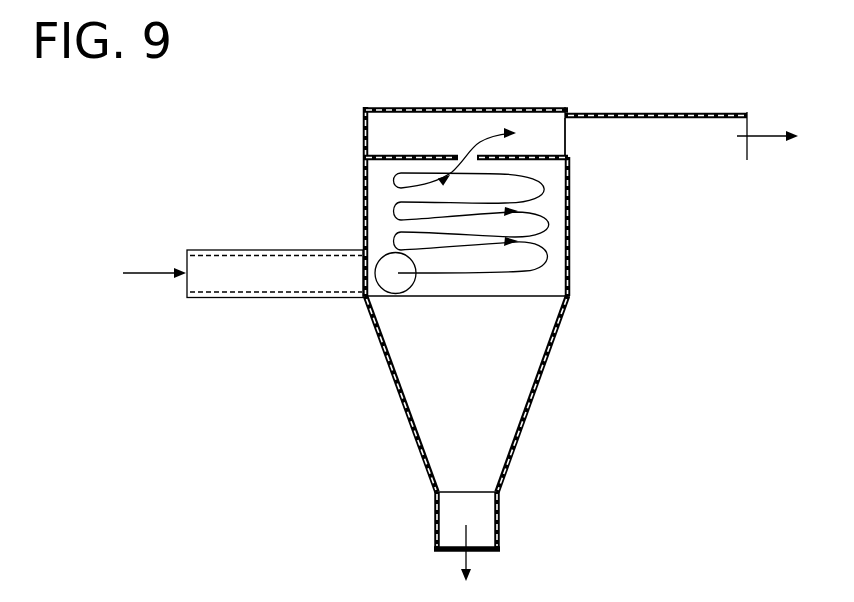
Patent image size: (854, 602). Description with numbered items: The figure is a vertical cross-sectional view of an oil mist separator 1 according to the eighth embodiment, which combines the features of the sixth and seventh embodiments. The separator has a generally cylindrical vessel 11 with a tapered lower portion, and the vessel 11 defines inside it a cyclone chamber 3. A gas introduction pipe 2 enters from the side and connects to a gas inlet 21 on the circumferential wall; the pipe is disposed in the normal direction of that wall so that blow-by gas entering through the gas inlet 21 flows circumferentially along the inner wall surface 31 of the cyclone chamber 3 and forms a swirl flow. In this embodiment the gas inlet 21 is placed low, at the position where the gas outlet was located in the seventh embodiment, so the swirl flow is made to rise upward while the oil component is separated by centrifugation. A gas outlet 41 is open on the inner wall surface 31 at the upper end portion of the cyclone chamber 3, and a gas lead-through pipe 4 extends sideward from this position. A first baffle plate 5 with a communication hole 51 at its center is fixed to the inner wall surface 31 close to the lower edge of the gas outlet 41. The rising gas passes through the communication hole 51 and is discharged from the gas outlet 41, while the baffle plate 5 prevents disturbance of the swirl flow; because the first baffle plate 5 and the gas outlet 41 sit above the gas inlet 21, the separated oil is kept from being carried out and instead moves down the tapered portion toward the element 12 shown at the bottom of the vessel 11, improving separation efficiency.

The oil mist separator 1 is at (562, 374).
The gas introduction pipe 2 is at (225, 298).
The gas inlet 21 is at (394, 281).
The cyclone chamber 3 is at (380, 191).
The inner wall surface 31 is at (575, 238).
The gas lead-through pipe 4 is at (690, 162).
The gas outlet 41 is at (560, 130).
The first baffle plate 5 is at (400, 156).
The communication hole 51 is at (460, 153).
The vessel 11 is at (364, 225).
The discharge port 12 is at (434, 520).